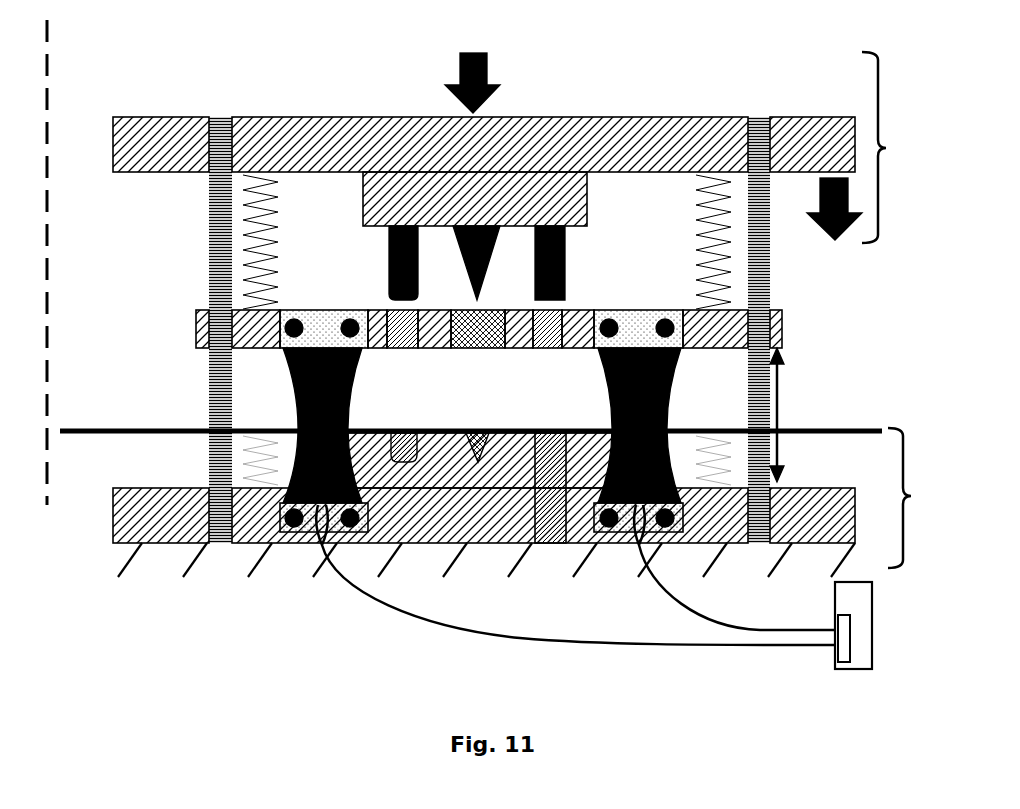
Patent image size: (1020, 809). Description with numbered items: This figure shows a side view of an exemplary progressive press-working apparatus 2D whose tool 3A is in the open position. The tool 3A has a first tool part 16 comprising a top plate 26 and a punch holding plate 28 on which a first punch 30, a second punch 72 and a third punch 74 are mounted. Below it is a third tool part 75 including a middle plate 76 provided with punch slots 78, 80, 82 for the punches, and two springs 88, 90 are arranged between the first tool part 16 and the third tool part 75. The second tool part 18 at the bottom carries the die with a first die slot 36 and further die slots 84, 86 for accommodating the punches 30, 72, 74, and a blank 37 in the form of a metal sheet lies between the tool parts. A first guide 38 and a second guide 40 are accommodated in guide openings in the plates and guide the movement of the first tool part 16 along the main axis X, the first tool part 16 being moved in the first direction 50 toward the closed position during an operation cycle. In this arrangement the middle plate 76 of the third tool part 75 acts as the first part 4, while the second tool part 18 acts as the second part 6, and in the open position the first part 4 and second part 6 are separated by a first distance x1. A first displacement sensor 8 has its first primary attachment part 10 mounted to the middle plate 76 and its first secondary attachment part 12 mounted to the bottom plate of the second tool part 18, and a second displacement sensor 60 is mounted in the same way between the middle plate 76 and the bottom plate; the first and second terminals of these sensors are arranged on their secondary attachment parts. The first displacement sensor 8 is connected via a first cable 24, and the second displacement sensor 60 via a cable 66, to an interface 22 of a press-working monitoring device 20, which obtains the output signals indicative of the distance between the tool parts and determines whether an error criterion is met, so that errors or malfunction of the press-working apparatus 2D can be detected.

The press-working apparatus 2D is at (169, 46).
The tool 3A is at (230, 70).
The main axis X is at (48, 222).
The first tool part 16 is at (878, 148).
The top plate 26 is at (372, 120).
The punch holding plate 28 is at (363, 209).
The third punch 74 is at (389, 266).
The second punch 72 is at (458, 253).
The first punch 30 is at (533, 253).
The first direction 50 is at (852, 190).
The first guide 38 is at (209, 207).
The second guide 40 is at (770, 262).
The spring 88 is at (280, 232).
The spring 90 is at (693, 270).
The first part 4 is at (460, 314).
The third tool part 75 is at (179, 351).
The middle plate 76 is at (196, 340).
The punch slot 82 is at (400, 348).
The punch slot 80 is at (470, 348).
The punch slot 78 is at (550, 348).
The first primary attachment part 10 is at (622, 325).
The die slot 86 is at (405, 432).
The die slot 84 is at (480, 432).
The first die slot 36 is at (553, 432).
The second displacement sensor 60 is at (283, 389).
The first displacement sensor 8 is at (600, 372).
The blank 37 is at (125, 428).
The second tool part 18 is at (903, 496).
The second part 6 is at (113, 525).
The first secondary attachment part 12 is at (668, 545).
The first distance x1 is at (780, 378).
The cable 66 is at (365, 592).
The first cable 24 is at (742, 627).
The press-working monitoring device 20 is at (835, 595).
The interface 22 is at (850, 640).